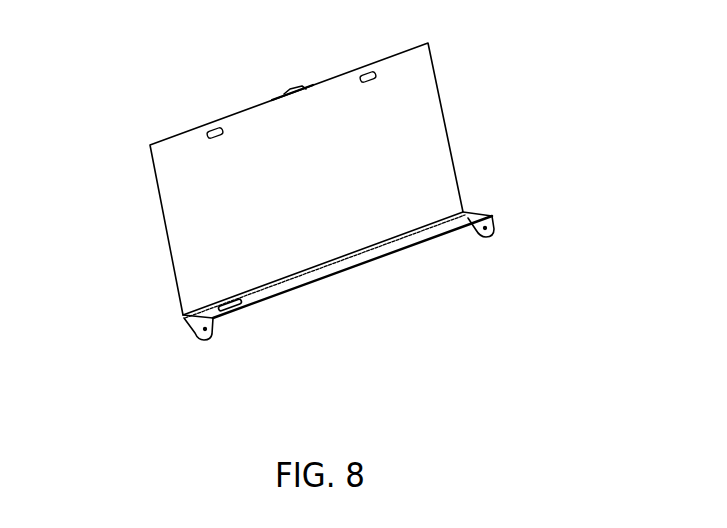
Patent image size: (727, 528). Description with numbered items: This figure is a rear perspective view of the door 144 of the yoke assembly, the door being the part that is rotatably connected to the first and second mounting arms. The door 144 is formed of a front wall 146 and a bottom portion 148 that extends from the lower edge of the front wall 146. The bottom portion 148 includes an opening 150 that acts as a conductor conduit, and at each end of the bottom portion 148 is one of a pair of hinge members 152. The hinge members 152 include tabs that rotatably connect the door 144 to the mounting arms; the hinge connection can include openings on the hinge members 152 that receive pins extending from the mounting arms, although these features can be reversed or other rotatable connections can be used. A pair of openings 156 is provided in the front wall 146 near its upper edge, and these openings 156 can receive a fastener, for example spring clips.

The door 144 is at (166, 137).
The front wall 146 is at (436, 148).
The bottom portion 148 is at (406, 242).
The opening 150 is at (241, 308).
The hinge members 152 is at (186, 322).
The openings 156 is at (375, 70).